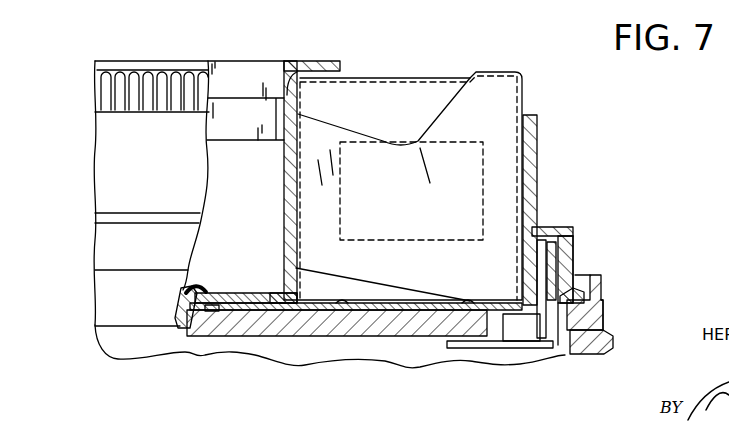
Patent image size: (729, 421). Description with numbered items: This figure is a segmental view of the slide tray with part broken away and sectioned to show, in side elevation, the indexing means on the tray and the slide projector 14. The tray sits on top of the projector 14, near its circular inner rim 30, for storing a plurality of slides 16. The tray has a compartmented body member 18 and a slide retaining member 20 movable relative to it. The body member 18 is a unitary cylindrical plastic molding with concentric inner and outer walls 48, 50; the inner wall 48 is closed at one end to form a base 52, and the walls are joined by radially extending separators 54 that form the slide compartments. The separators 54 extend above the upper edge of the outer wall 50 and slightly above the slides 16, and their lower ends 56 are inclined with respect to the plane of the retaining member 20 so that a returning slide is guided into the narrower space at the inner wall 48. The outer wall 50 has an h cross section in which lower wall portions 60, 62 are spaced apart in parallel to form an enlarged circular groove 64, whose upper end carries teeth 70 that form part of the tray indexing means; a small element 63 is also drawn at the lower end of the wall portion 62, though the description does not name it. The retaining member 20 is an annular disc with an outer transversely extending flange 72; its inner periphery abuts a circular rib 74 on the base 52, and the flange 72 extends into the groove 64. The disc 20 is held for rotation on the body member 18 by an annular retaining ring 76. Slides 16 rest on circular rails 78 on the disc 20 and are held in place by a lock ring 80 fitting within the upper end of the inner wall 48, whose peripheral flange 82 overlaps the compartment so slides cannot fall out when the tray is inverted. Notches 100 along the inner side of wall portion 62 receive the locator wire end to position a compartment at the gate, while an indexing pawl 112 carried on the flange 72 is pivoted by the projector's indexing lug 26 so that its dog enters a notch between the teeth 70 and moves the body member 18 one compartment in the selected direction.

The slide projector 14 is at (614, 341).
The slide 16 is at (415, 92).
The compartmented body member 18 is at (558, 108).
The slide retaining member 20 is at (393, 307).
The indexing pawl 26 is at (525, 330).
The circular inner rim 30 is at (601, 275).
The inner wall 48 is at (283, 184).
The outer wall 50 is at (537, 141).
The base 52 is at (237, 304).
The separator 54 is at (507, 153).
The inclined lower end 56 is at (383, 291).
The lower wall portion 60 is at (523, 255).
The lower wall portion 62 is at (566, 263).
The catch 63 is at (583, 298).
The circular groove 64 is at (574, 250).
The teeth 70 is at (561, 229).
The peripheral flange 72 is at (545, 272).
The circular rib 74 is at (185, 291).
The retaining ring 76 is at (214, 318).
The circular rail 78 is at (344, 302).
The lock ring 80 is at (283, 80).
The peripheral flange 82 is at (318, 61).
The notch 100 is at (603, 316).
The indexing pawl 112 is at (560, 322).